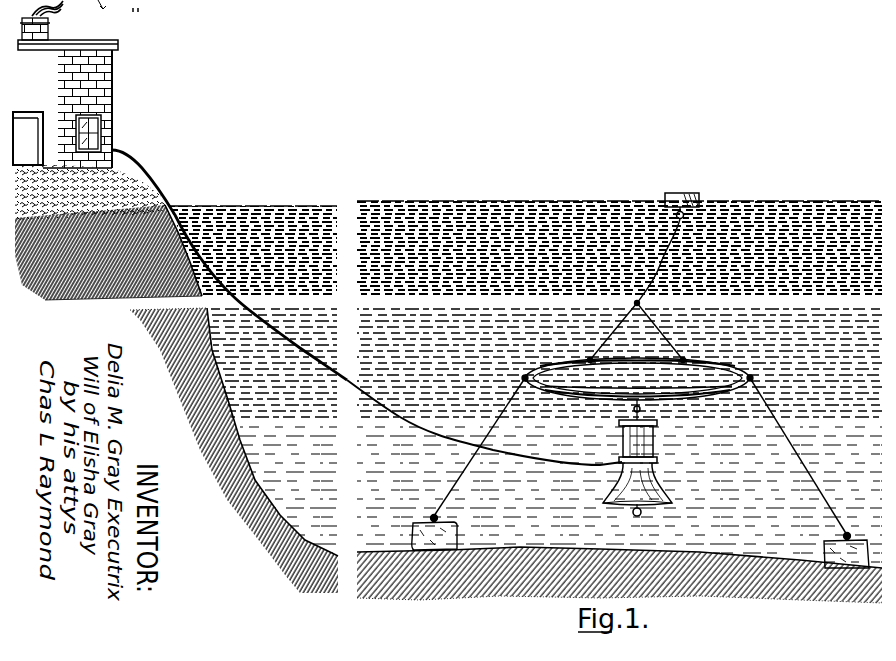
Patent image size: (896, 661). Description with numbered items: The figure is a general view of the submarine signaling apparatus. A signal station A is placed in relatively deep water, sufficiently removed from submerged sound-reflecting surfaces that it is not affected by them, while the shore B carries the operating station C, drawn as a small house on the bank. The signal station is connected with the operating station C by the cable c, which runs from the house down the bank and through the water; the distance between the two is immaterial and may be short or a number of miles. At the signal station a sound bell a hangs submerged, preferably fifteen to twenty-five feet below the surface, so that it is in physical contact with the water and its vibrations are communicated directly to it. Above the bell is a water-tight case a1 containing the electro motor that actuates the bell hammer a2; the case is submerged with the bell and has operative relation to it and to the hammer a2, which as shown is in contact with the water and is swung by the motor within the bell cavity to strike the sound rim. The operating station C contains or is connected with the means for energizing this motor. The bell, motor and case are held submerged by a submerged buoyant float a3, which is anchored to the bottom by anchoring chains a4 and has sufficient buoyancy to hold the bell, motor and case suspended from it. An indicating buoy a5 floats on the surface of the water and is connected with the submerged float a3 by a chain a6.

The signal station A is at (637, 368).
The shore B is at (176, 379).
The operating station C is at (75, 84).
The cable c is at (367, 307).
The sound bell a is at (653, 478).
The water-tight case a1 is at (657, 433).
The bell hammer a2 is at (630, 516).
The submerged buoyant float a3 is at (704, 361).
The anchoring chains a4 is at (812, 464).
The indicating buoy a5 is at (685, 194).
The chain a6 is at (663, 263).